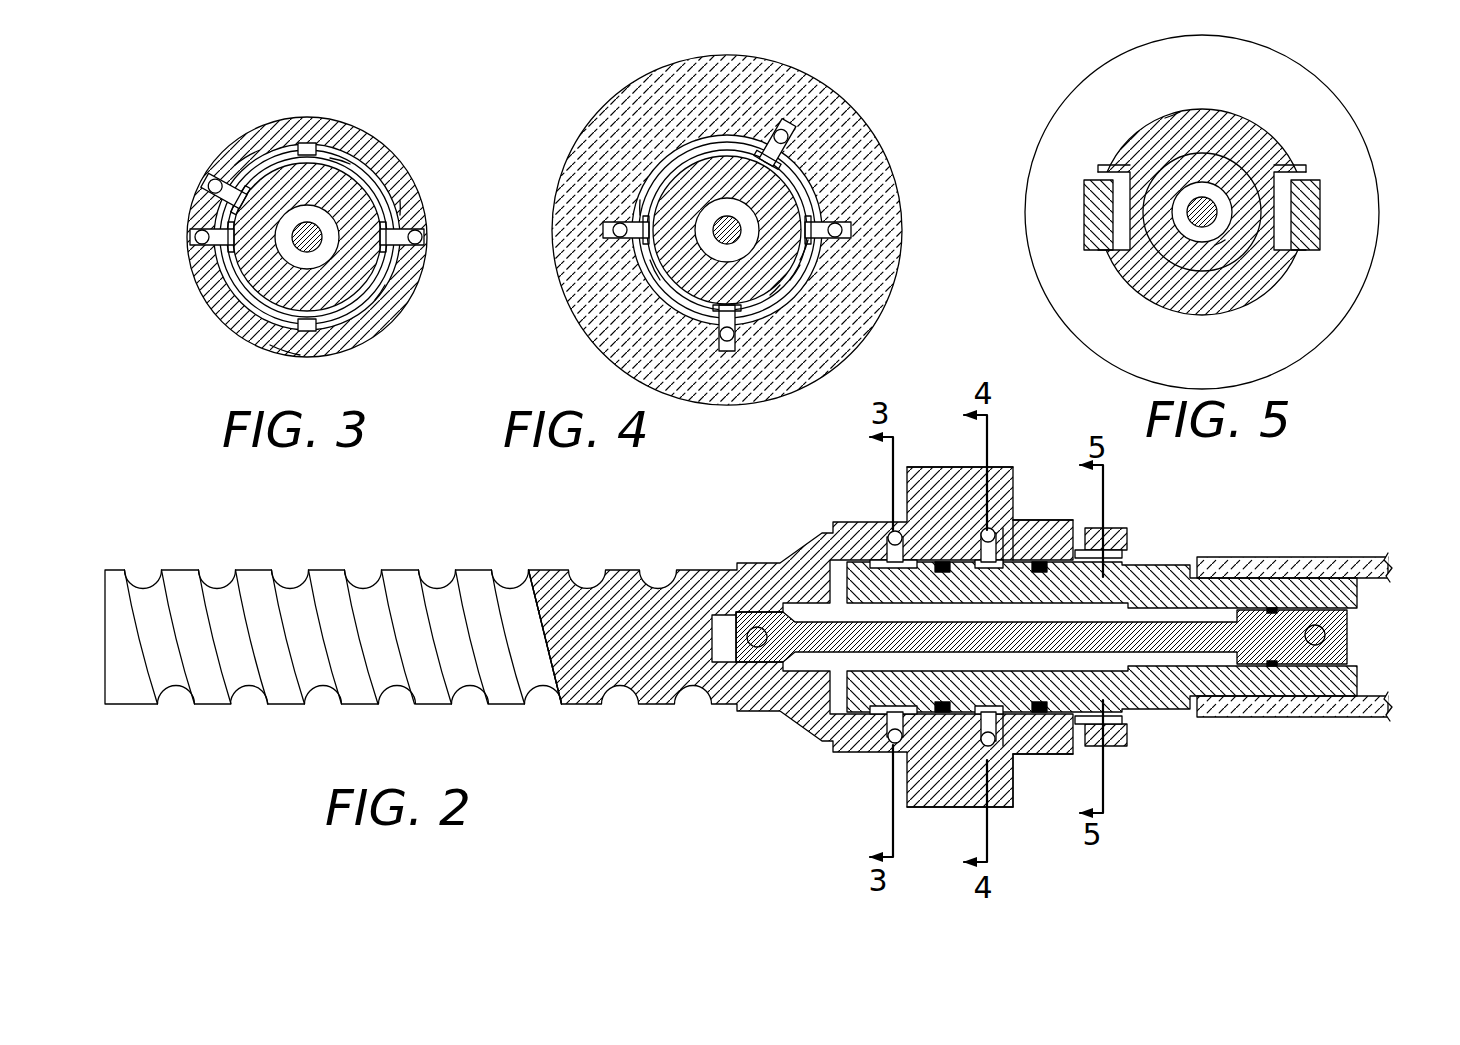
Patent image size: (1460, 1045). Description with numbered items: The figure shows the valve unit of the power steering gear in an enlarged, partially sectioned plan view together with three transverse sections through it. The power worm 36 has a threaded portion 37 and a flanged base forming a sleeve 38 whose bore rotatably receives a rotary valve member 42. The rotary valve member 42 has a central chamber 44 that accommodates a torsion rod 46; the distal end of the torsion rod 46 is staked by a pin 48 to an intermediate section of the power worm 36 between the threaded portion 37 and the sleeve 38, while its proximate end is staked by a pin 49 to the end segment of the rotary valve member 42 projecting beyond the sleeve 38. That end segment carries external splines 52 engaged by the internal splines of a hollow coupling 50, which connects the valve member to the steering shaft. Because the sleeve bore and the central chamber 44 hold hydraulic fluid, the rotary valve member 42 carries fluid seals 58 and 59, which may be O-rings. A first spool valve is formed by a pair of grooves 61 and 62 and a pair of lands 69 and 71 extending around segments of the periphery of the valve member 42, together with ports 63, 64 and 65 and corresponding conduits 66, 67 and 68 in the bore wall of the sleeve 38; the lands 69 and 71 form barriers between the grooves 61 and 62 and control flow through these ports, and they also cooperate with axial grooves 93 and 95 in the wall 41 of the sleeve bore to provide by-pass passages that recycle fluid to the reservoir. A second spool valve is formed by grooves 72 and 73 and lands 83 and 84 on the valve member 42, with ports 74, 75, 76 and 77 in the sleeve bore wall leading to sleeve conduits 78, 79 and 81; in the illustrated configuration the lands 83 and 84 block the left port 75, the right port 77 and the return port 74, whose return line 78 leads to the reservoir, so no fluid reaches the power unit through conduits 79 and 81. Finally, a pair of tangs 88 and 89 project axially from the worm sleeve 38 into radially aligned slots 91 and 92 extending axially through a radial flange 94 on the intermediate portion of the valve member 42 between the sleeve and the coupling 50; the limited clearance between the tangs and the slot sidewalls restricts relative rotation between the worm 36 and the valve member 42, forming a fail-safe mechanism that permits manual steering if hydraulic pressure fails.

In FIG. 2, the power worm 36 is at (325, 566).
In FIG. 5, the power worm 36 is at (1170, 270).
In FIG. 2, the threaded portion 37 is at (366, 572).
In FIG. 2, the sleeve 38 is at (803, 803).
In FIG. 5, the sleeve 38 is at (1318, 98).
In FIG. 2, the wall of sleeve bore 41 is at (800, 550).
In FIG. 3, the wall of sleeve bore 41 is at (362, 180).
In FIG. 2, the rotary valve member 42 is at (1360, 596).
In FIG. 3, the rotary valve member 42 is at (398, 290).
In FIG. 4, the rotary valve member 42 is at (676, 165).
In FIG. 5, the rotary valve member 42 is at (1240, 262).
In FIG. 2, the central chamber 44 is at (805, 665).
In FIG. 3, the central chamber 44 is at (325, 245).
In FIG. 4, the central chamber 44 is at (722, 250).
In FIG. 5, the central chamber 44 is at (1215, 232).
In FIG. 2, the torsion rod 46 is at (815, 603).
In FIG. 3, the torsion rod 46 is at (325, 252).
In FIG. 4, the torsion rod 46 is at (705, 215).
In FIG. 5, the torsion rod 46 is at (1195, 208).
In FIG. 2, the pin 48 is at (752, 650).
In FIG. 5, the pin 48 is at (1205, 272).
In FIG. 2, the pin 49 is at (1330, 697).
In FIG. 2, the hollow coupling 50 is at (1258, 560).
In FIG. 2, the external splines 52 is at (1305, 560).
In FIG. 2, the fluid seal 58 is at (940, 574).
In FIG. 2, the fluid seal 59 is at (1038, 573).
In FIG. 2, the groove 61 is at (880, 560).
In FIG. 3, the groove 61 is at (245, 278).
In FIG. 2, the groove 62 is at (860, 722).
In FIG. 3, the groove 62 is at (400, 167).
In FIG. 2, the port 63 is at (958, 474).
In FIG. 3, the port 63 is at (215, 258).
In FIG. 3, the port 64 is at (236, 160).
In FIG. 2, the port 65 is at (913, 740).
In FIG. 3, the port 65 is at (415, 205).
In FIG. 2, the conduit 66 is at (889, 528).
In FIG. 3, the conduit 66 is at (198, 230).
In FIG. 3, the conduit 67 is at (214, 181).
In FIG. 4, the conduit 67 is at (790, 130).
In FIG. 2, the conduit 68 is at (886, 750).
In FIG. 3, the conduit 68 is at (425, 237).
In FIG. 3, the land 69 is at (277, 342).
In FIG. 3, the land 71 is at (340, 157).
In FIG. 4, the groove 72 is at (732, 152).
In FIG. 2, the groove 73 is at (975, 568).
In FIG. 4, the groove 73 is at (795, 275).
In FIG. 4, the return port 74 is at (760, 305).
In FIG. 2, the left port 75 is at (985, 526).
In FIG. 4, the left port 75 is at (645, 222).
In FIG. 4, the port 76 is at (810, 150).
In FIG. 2, the right port 77 is at (985, 750).
In FIG. 4, the right port 77 is at (845, 228).
In FIG. 4, the return line 78 is at (735, 342).
In FIG. 2, the sleeve conduit 79 is at (1008, 528).
In FIG. 4, the sleeve conduit 79 is at (612, 232).
In FIG. 2, the sleeve conduit 81 is at (1000, 742).
In FIG. 4, the sleeve conduit 81 is at (860, 245).
In FIG. 2, the land 83 is at (1025, 545).
In FIG. 4, the land 83 is at (640, 248).
In FIG. 2, the land 84 is at (1008, 732).
In FIG. 4, the land 84 is at (835, 262).
In FIG. 2, the tang 88 is at (1127, 733).
In FIG. 5, the tang 88 is at (1084, 216).
In FIG. 2, the tang 89 is at (1135, 540).
In FIG. 5, the tang 89 is at (1320, 214).
In FIG. 2, the slot 91 is at (1125, 713).
In FIG. 5, the slot 91 is at (1108, 172).
In FIG. 2, the slot 92 is at (1128, 556).
In FIG. 5, the slot 92 is at (1297, 172).
In FIG. 3, the axial groove 93 is at (325, 330).
In FIG. 2, the radial flange 94 is at (1115, 530).
In FIG. 5, the radial flange 94 is at (1170, 108).
In FIG. 3, the axial groove 95 is at (304, 115).